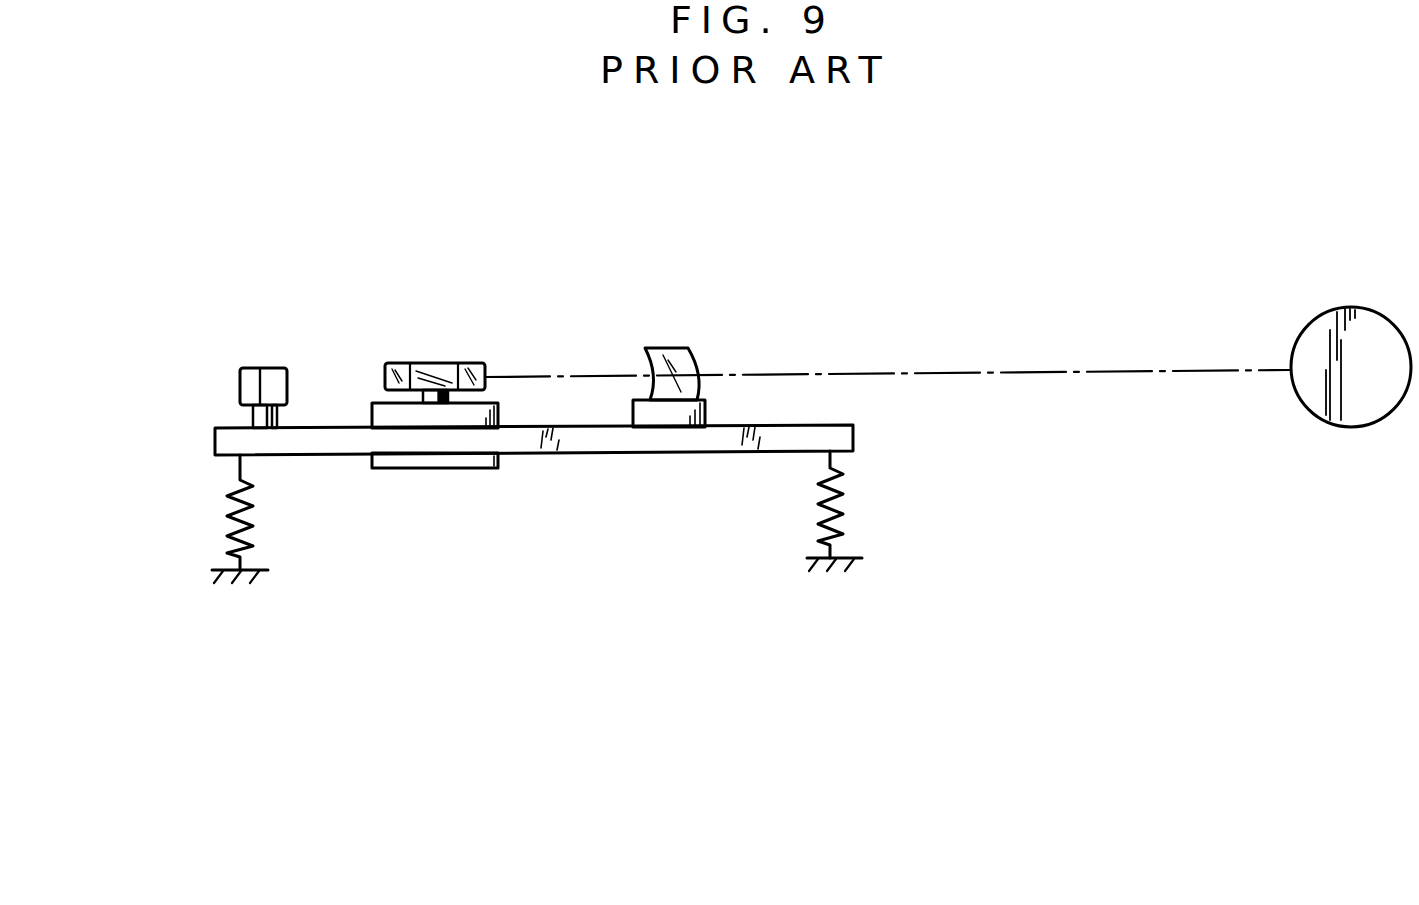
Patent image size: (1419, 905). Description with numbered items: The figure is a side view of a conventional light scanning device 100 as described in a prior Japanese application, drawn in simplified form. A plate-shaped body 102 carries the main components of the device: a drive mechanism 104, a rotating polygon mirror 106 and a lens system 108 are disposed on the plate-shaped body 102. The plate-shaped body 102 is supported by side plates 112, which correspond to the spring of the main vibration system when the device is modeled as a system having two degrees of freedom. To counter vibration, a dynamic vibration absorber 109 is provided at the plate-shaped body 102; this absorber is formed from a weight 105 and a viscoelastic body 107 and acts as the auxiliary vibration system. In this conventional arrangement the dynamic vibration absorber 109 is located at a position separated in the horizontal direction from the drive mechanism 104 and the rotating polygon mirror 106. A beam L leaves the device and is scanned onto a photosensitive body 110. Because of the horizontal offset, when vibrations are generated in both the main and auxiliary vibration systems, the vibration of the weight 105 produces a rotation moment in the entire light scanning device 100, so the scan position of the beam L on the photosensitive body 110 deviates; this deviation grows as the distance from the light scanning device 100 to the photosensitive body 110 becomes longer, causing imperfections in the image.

The light scanning device 100 is at (615, 200).
The plate-shaped body 102 is at (215, 428).
The drive mechanism 104 is at (370, 427).
The weight 105 is at (240, 368).
The rotating polygon mirror 106 is at (442, 363).
The viscoelastic body 107 is at (252, 415).
The lens system 108 is at (655, 348).
The dynamic vibration absorber 109 is at (273, 365).
The photosensitive body 110 is at (1303, 407).
The side plates 112 is at (250, 515).
The beam L is at (848, 370).